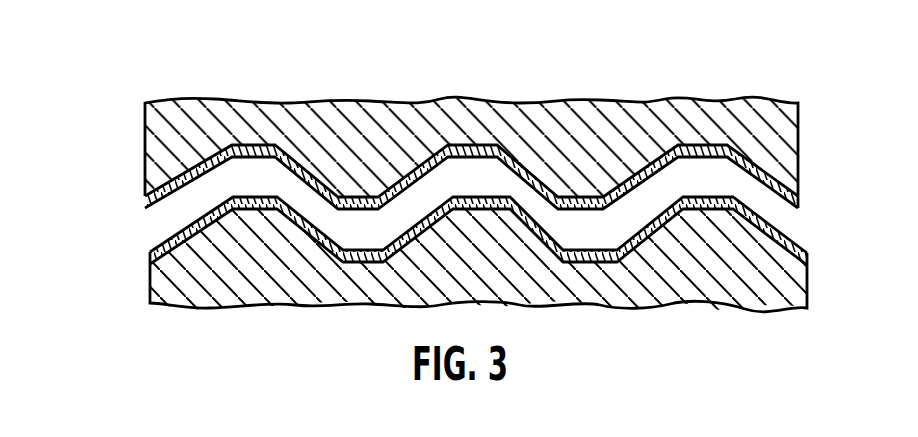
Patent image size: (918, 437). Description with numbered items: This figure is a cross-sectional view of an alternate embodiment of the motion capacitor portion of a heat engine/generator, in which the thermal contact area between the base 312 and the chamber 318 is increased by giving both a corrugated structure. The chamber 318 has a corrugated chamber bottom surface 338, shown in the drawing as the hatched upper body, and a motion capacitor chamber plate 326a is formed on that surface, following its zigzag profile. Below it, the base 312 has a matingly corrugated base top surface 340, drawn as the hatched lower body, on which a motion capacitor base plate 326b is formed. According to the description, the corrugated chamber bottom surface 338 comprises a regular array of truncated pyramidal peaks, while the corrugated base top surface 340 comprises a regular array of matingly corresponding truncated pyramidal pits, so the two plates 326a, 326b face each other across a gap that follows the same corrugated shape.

The base 312 is at (424, 219).
The chamber 318 is at (420, 121).
The corrugated chamber bottom surface 338 is at (143, 155).
The motion capacitor chamber plate 326a is at (143, 206).
The motion capacitor base plate 326b is at (150, 252).
The corrugated base top surface 340 is at (147, 299).